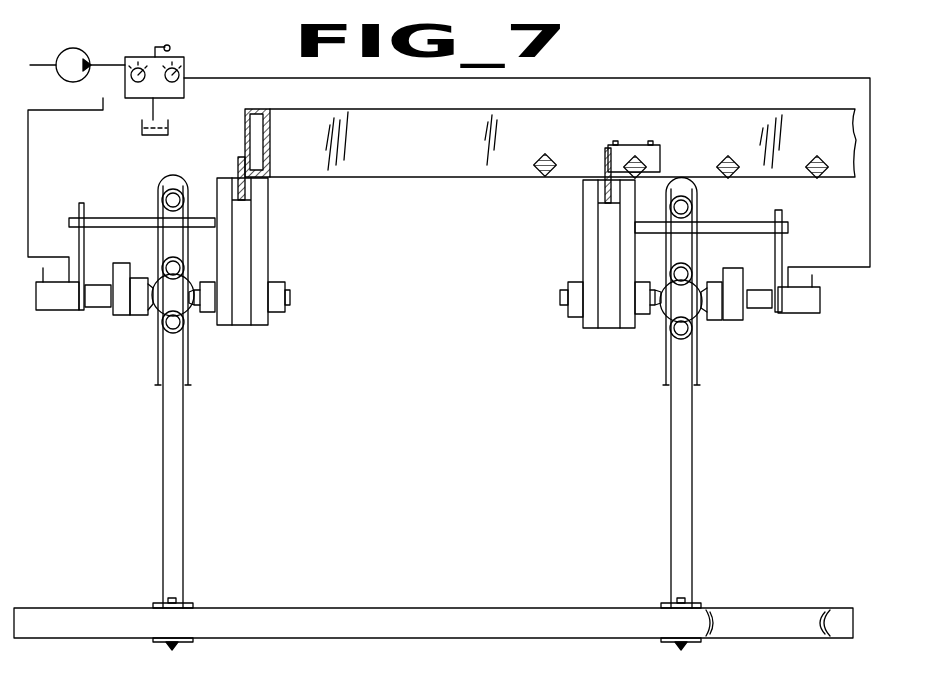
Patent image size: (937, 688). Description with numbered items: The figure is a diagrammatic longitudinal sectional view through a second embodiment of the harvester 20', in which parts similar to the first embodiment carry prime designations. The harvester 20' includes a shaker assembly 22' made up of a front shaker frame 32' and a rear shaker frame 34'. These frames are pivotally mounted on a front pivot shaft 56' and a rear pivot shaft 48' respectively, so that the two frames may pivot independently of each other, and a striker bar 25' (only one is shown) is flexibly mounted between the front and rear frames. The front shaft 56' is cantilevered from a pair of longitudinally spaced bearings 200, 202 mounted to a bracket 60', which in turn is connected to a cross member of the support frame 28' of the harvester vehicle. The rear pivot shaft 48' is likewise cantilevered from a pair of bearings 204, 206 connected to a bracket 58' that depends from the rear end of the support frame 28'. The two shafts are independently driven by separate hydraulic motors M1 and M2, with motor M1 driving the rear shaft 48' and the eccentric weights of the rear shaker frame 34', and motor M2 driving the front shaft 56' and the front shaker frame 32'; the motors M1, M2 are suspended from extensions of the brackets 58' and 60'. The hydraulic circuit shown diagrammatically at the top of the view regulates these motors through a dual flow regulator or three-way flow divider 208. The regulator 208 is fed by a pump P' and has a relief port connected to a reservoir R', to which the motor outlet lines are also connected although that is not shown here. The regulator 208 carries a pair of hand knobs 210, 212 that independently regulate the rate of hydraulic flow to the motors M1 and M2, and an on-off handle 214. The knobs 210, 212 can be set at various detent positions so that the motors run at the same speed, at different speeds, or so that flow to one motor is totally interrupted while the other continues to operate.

The harvester 20' is at (442, 335).
The shaker assembly 22' is at (433, 412).
The striker bar 25' is at (433, 590).
The support frame 28' is at (550, 143).
The front shaker frame 32' is at (727, 414).
The rear shaker frame 34' is at (233, 412).
The rear pivot shaft 48' is at (232, 412).
The front pivot shaft 56' is at (696, 414).
The bracket 58' is at (280, 251).
The bracket 60' is at (567, 254).
The bearing 200 is at (572, 312).
The bearing 202 is at (640, 285).
The bearing 204 is at (212, 282).
The bearing 206 is at (281, 316).
The dual flow regulator 208 is at (152, 66).
The hand knob 210 is at (131, 77).
The hand knob 212 is at (180, 72).
The on-off handle 214 is at (170, 45).
The hydraulic motor M1 is at (73, 313).
The hydraulic motor M2 is at (818, 316).
The pump P' is at (64, 51).
The reservoir R' is at (119, 134).